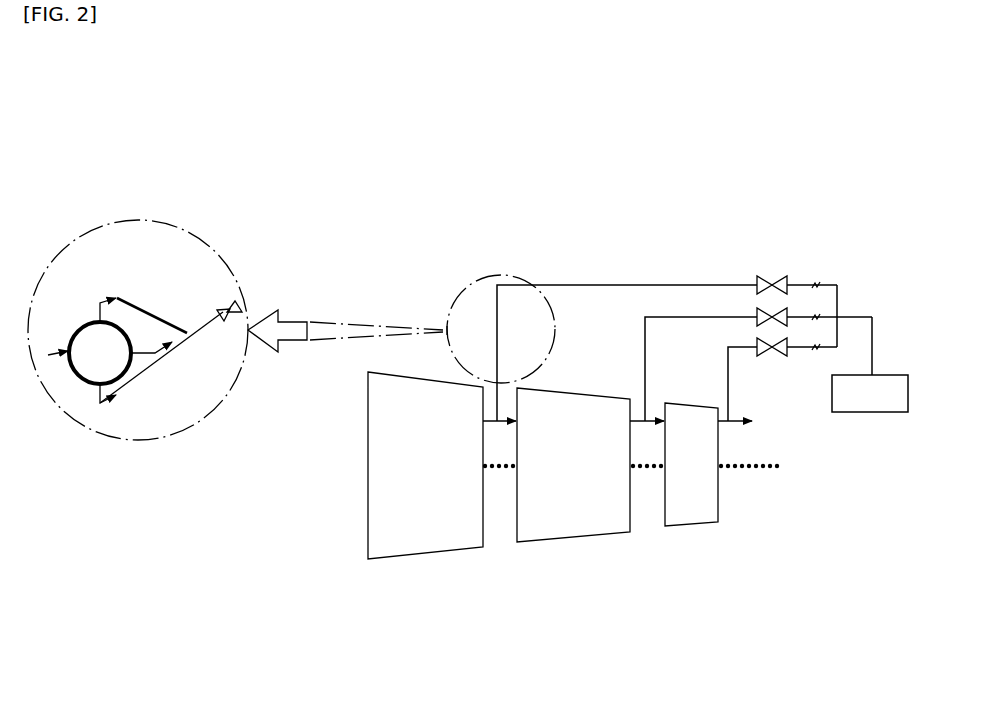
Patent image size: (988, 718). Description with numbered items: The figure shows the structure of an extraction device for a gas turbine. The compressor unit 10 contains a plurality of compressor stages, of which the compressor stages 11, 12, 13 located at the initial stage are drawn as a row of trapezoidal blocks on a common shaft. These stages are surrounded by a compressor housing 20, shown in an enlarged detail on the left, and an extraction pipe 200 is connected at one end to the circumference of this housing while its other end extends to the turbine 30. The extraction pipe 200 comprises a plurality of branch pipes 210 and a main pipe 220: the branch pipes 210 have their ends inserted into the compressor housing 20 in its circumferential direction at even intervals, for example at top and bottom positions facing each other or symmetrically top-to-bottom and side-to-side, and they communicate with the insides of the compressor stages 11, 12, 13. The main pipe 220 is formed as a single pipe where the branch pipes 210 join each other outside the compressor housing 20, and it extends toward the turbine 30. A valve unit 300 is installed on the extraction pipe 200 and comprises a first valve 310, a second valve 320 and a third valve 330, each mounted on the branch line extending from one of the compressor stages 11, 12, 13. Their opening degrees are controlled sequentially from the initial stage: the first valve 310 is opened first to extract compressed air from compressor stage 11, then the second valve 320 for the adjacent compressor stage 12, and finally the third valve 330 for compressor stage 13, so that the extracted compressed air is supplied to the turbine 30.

The compressor unit 10 is at (423, 627).
The compressor stage 11 is at (425, 553).
The compressor stage 12 is at (572, 538).
The compressor stage 13 is at (690, 525).
The compressor housing 20 is at (100, 323).
The turbine 30 is at (868, 413).
The extraction pipe 200 is at (184, 472).
The branch pipe 210 is at (231, 304).
The main pipe 220 is at (205, 331).
The valve unit 300 is at (583, 143).
The first valve 310 is at (767, 276).
The second valve 320 is at (777, 309).
The third valve 330 is at (777, 355).